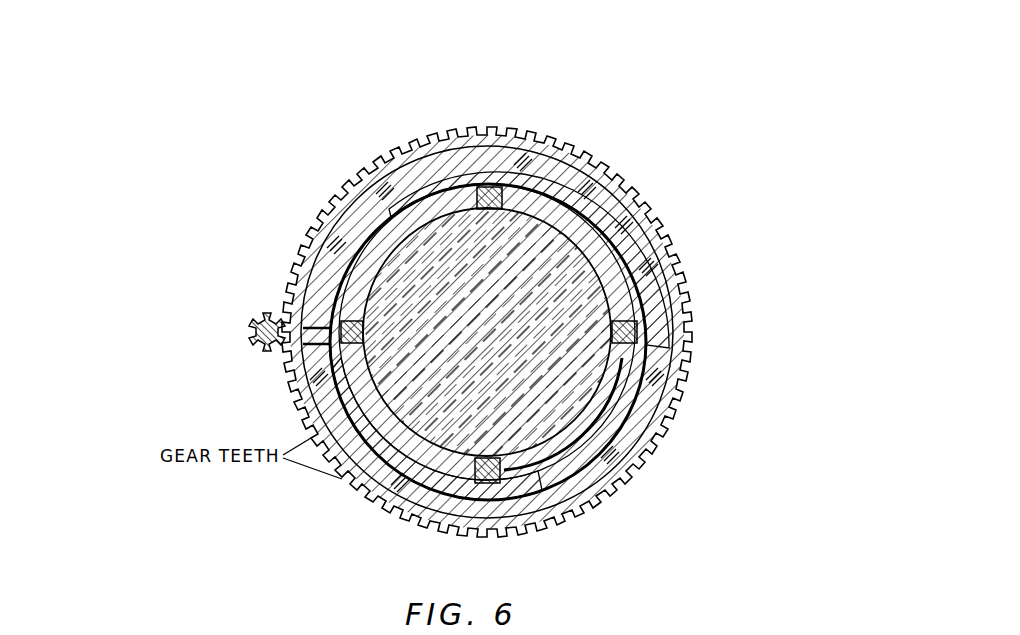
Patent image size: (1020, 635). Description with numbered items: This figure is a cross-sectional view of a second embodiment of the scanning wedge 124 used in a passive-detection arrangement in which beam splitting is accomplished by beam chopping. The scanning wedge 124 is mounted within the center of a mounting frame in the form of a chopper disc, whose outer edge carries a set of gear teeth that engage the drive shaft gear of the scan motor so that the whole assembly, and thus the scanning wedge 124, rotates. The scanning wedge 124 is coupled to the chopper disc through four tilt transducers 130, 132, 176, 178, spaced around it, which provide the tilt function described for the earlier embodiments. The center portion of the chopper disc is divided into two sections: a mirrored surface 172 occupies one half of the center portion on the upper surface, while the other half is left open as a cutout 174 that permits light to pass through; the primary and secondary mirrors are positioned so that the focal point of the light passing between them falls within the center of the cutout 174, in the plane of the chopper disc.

The tilt transducer 176 is at (492, 188).
The mirrored surface 172 is at (563, 173).
The scanning wedge 124 is at (590, 257).
The tilt transducer 132 is at (615, 327).
The cutout 174 is at (642, 410).
The tilt transducer 130 is at (342, 321).
The tilt transducer 178 is at (485, 484).